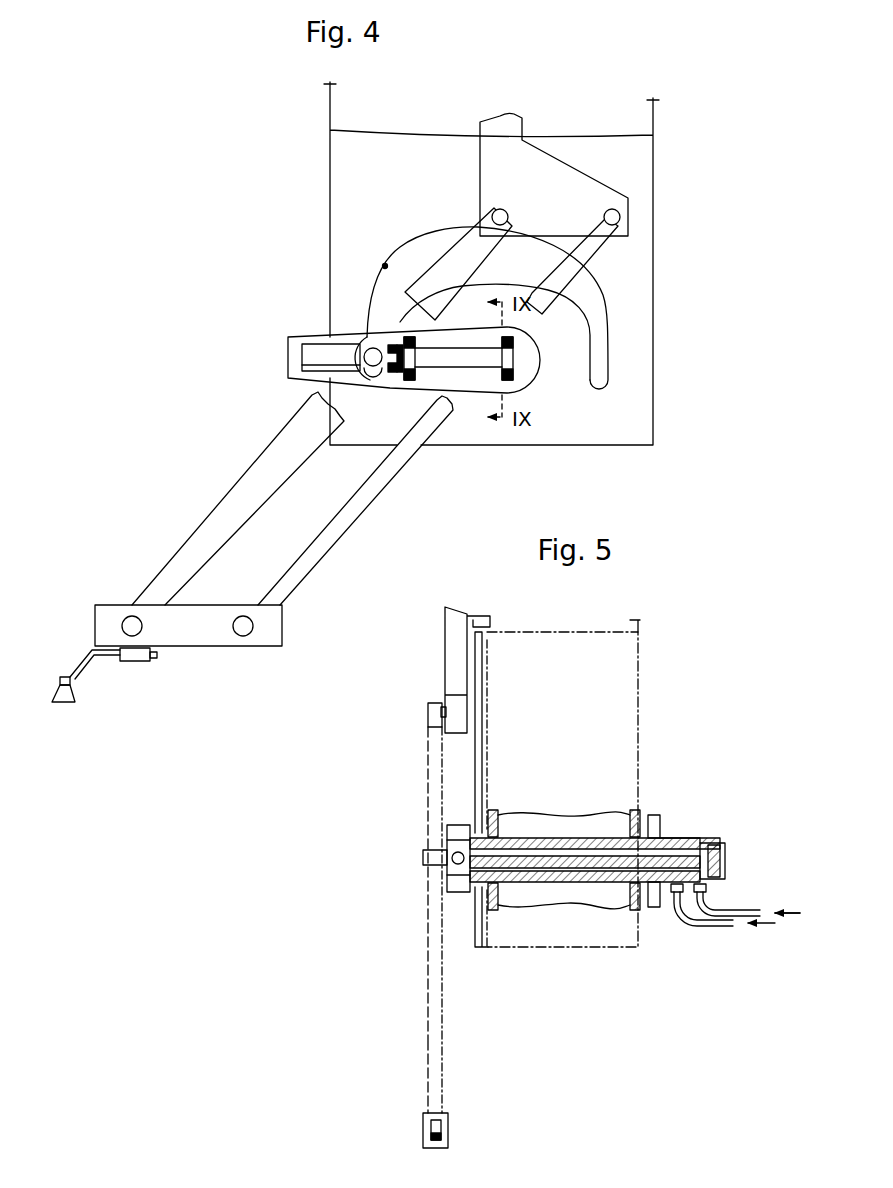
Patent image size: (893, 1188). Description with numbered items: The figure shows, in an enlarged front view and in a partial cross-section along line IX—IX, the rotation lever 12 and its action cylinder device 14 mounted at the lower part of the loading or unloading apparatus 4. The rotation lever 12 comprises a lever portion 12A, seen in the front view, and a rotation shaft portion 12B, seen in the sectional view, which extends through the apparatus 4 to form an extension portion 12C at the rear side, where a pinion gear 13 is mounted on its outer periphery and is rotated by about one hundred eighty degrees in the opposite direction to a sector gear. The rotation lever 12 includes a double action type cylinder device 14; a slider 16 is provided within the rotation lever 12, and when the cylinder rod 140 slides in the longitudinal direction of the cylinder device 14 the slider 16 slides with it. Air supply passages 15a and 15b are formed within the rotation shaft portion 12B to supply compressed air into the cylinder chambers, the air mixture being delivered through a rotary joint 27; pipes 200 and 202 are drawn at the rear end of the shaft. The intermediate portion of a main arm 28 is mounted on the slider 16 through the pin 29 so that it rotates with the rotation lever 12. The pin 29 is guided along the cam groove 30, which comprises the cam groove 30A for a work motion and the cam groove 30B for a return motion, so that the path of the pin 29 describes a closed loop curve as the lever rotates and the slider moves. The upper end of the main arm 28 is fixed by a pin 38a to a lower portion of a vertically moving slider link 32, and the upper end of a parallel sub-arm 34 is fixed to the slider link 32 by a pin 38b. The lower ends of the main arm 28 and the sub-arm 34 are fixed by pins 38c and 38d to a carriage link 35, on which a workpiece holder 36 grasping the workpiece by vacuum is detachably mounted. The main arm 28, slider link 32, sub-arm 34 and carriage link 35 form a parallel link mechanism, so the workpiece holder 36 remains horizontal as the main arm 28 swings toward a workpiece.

In FIG. 4, the loading or unloading apparatus 4 is at (322, 205).
In FIG. 5, the loading or unloading apparatus 4 is at (642, 728).
In FIG. 4, the slider link 32 is at (568, 168).
In FIG. 5, the slider link 32 is at (445, 683).
In FIG. 4, the pin 38a is at (492, 211).
In FIG. 4, the pin 38b is at (620, 213).
In FIG. 4, the cam groove 30 is at (423, 308).
In FIG. 4, the cam groove for a work motion 30A is at (385, 266).
In FIG. 4, the cam groove for a return motion 30B is at (400, 322).
In FIG. 4, the pin 29 is at (370, 350).
In FIG. 4, the slider 16 is at (310, 381).
In FIG. 4, the cylinder rod 140 is at (395, 384).
In FIG. 4, the lever portion 12A is at (462, 383).
In FIG. 4, the double action type cylinder device 14 is at (478, 360).
In FIG. 5, the double action type cylinder device 14 is at (458, 892).
In FIG. 4, the rotation lever 12 is at (540, 378).
In FIG. 5, the rotation lever 12 is at (562, 890).
In FIG. 4, the main arm 28 is at (222, 503).
In FIG. 5, the main arm 28 is at (428, 905).
In FIG. 4, the sub-arm 34 is at (357, 512).
In FIG. 4, the pin 38c is at (126, 612).
In FIG. 4, the pin 38d is at (242, 611).
In FIG. 4, the carriage link 35 is at (197, 648).
In FIG. 5, the carriage link 35 is at (423, 1118).
In FIG. 4, the workpiece holder 36 is at (78, 675).
In FIG. 5, the rotation shaft portion 12B is at (553, 835).
In FIG. 5, the rotary joint 27 is at (597, 860).
In FIG. 5, the pinion gear 13 is at (657, 815).
In FIG. 5, the extension portion 12C is at (673, 838).
In FIG. 5, the air supply passage 15a is at (693, 842).
In FIG. 5, the air supply passage 15b is at (668, 872).
In FIG. 5, the supply pipe 200 is at (752, 910).
In FIG. 5, the return pipe 202 is at (728, 927).